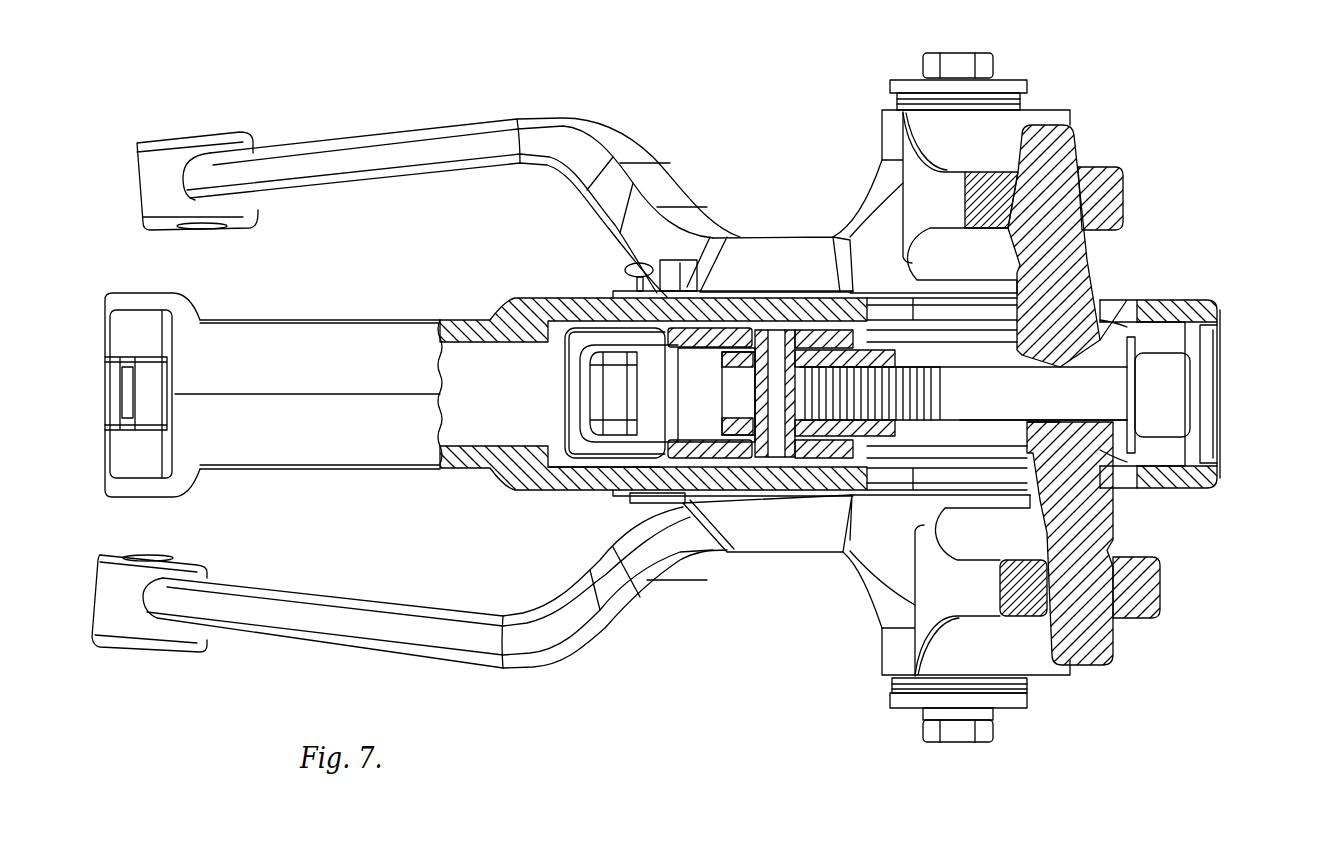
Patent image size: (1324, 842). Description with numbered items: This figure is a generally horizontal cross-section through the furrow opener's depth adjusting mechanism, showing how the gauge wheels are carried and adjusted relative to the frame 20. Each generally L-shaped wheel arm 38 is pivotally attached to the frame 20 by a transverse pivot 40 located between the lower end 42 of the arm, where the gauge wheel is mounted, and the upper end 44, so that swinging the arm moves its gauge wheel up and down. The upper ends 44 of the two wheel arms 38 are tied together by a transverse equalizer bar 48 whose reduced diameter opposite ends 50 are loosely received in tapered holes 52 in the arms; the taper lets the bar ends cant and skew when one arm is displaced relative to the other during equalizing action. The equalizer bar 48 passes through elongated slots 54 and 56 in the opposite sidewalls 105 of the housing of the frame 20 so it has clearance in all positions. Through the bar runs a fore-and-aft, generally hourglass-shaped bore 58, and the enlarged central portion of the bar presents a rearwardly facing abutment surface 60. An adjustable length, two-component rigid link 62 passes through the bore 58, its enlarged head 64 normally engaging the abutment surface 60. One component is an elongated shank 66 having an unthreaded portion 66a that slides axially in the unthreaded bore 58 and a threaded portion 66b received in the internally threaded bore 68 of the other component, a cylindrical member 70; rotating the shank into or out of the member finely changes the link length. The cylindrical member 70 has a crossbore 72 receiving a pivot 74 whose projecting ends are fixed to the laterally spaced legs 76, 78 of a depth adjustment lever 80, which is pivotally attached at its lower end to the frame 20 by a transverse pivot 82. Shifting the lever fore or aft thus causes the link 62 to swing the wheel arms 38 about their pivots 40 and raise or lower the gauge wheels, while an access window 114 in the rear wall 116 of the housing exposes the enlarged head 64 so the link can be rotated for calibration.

The frame 20 is at (486, 302).
The wheel arm 38 is at (712, 186).
The pivot 40 is at (960, 60).
The lower end of wheel arm 42 is at (193, 143).
The upper end of wheel arm 44 is at (1117, 178).
The equalizer bar 48 is at (1106, 270).
The reduced diameter opposite ends of equalizer bar 50 is at (1060, 137).
The tapered hole 52 is at (1017, 218).
The elongated slot 54 is at (1127, 485).
The elongated slot 56 is at (1127, 300).
The fore-and-aft bore 58 is at (1022, 428).
The abutment surface 60 is at (1115, 325).
The rigid link 62 is at (950, 428).
The enlarged head 64 is at (1170, 378).
The elongated shank 66 is at (982, 367).
The unthreaded portion 66a is at (983, 413).
The threaded portion 66b is at (920, 387).
The internally threaded bore 68 is at (740, 388).
The cylindrical member 70 is at (740, 428).
The crossbore 72 is at (760, 452).
The pivot 74 is at (780, 363).
The leg of depth adjustment lever 76 is at (695, 460).
The leg of depth adjustment lever 78 is at (703, 330).
The depth adjustment lever 80 is at (597, 462).
The transverse pivot 82 is at (660, 267).
The sidewalls of housing 105 is at (1207, 300).
The access window 114 is at (1222, 428).
The rear wall of housing 116 is at (1220, 312).